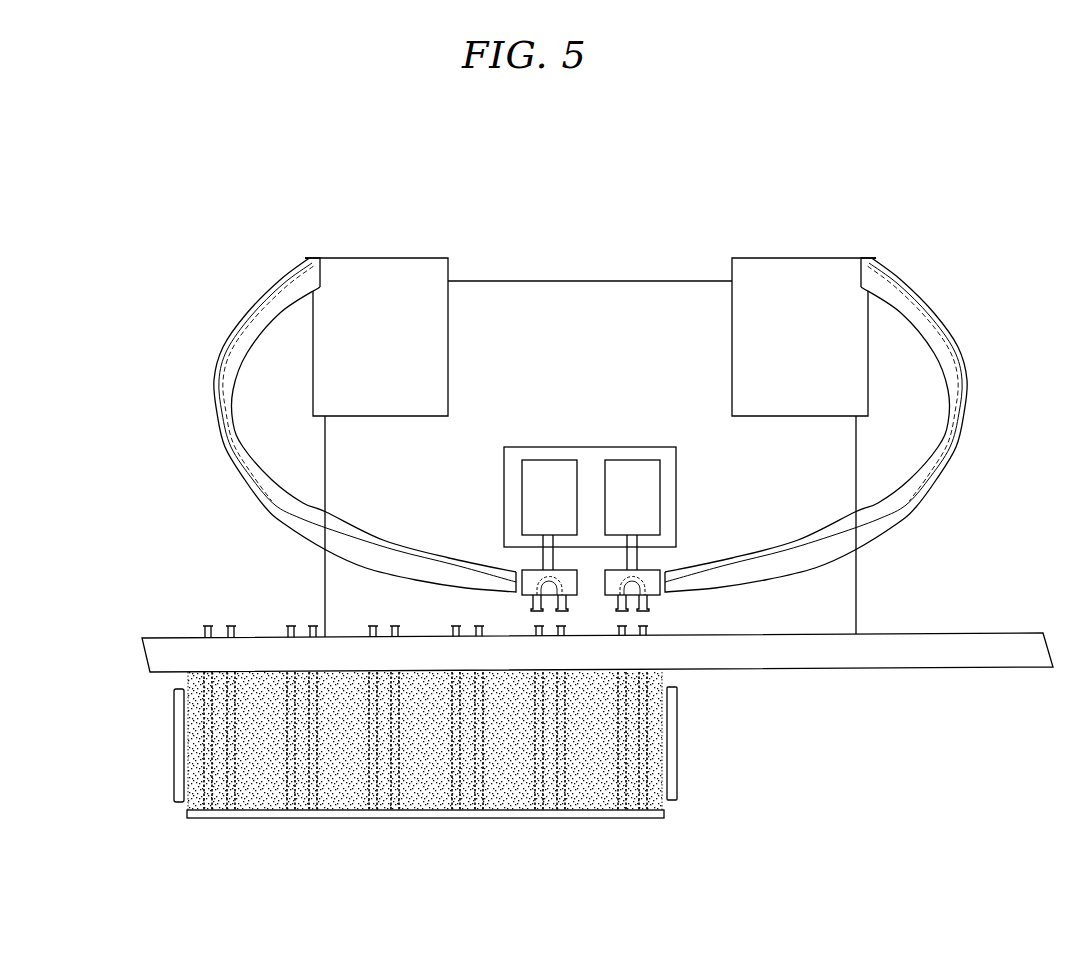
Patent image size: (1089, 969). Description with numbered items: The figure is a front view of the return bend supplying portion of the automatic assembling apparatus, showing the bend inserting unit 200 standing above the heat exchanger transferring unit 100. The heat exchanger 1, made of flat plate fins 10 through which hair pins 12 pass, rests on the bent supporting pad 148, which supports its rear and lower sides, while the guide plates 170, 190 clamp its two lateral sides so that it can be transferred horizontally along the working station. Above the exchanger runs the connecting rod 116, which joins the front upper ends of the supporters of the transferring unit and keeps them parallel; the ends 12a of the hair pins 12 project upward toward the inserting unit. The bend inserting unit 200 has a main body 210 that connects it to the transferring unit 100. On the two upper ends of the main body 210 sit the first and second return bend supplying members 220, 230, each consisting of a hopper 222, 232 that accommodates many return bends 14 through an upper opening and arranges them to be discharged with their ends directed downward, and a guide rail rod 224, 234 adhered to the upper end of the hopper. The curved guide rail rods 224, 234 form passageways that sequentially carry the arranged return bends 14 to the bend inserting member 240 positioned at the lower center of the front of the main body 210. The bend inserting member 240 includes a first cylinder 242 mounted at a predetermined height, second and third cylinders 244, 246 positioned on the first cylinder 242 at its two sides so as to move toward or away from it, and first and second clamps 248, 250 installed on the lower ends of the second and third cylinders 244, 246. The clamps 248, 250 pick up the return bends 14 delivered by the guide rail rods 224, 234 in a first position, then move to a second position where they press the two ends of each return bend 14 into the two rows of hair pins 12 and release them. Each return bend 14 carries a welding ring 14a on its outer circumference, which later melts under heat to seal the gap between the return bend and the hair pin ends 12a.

The heat exchanger 1 is at (506, 805).
The flat plate fins 10 is at (338, 788).
The hair pins 12 is at (655, 627).
The ends of hair pin 12a is at (648, 618).
The return bends 14 is at (653, 613).
The welding ring 14a is at (535, 608).
The heat exchanger transferring unit 100 is at (443, 785).
The connecting rod 116 is at (908, 660).
The supporting pad 148 is at (263, 815).
The guide plate 170 is at (170, 760).
The guide plate 190 is at (670, 795).
The bend inserting unit 200 is at (866, 194).
The main body 210 is at (601, 290).
The first return bend supplying member 220 is at (398, 268).
The hopper 222 is at (324, 235).
The guide rail rod 224 is at (232, 463).
The second return bend supplying member 230 is at (847, 358).
The hopper 232 is at (918, 258).
The guide rail rod 234 is at (922, 493).
The bend inserting member 240 is at (655, 425).
The first cylinder 242 is at (594, 448).
The second cylinder 244 is at (518, 488).
The third cylinder 246 is at (653, 497).
The first clamp 248 is at (530, 572).
The second clamp 250 is at (657, 570).